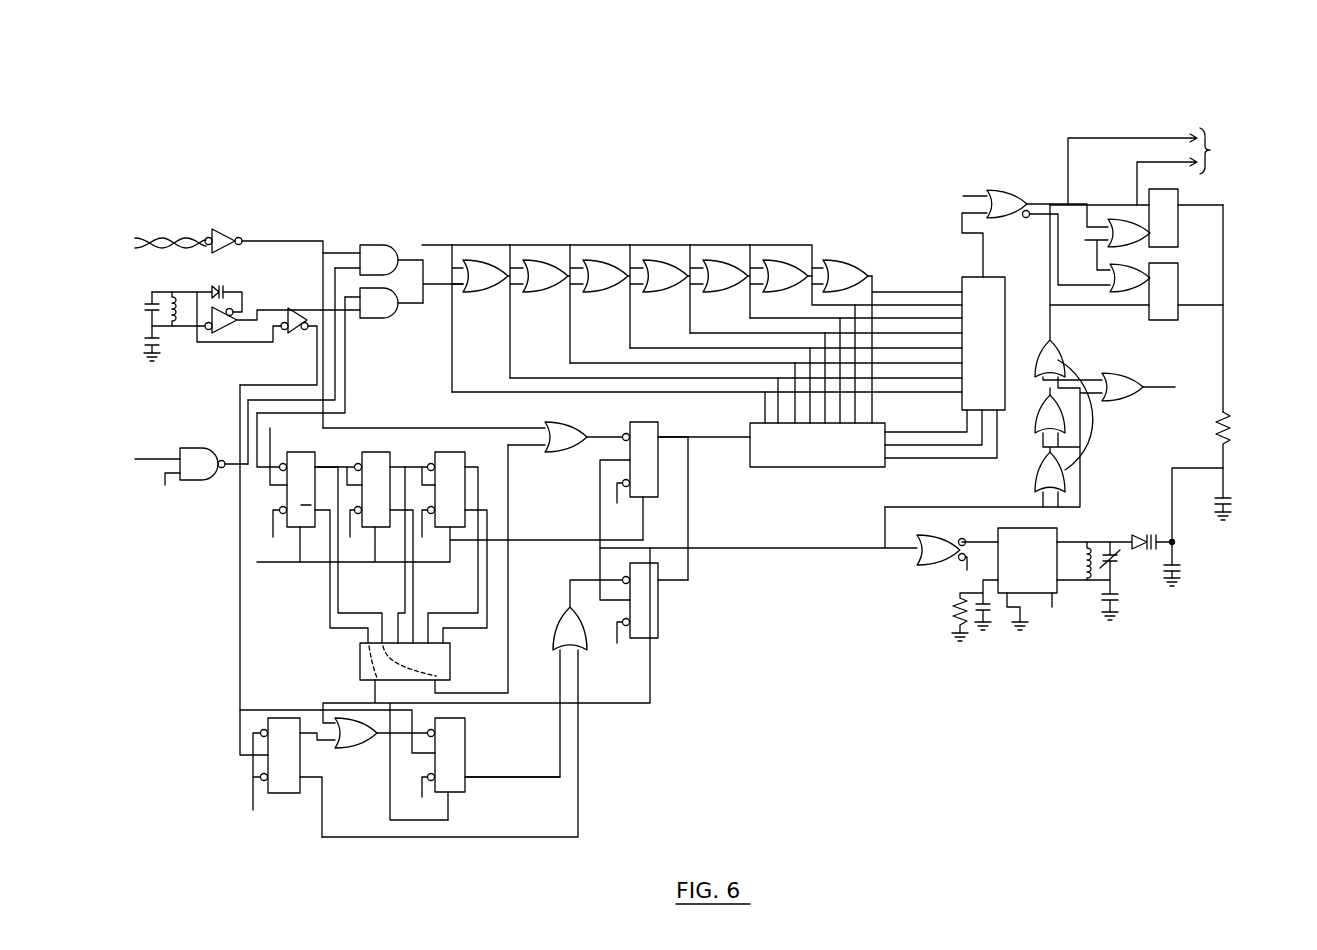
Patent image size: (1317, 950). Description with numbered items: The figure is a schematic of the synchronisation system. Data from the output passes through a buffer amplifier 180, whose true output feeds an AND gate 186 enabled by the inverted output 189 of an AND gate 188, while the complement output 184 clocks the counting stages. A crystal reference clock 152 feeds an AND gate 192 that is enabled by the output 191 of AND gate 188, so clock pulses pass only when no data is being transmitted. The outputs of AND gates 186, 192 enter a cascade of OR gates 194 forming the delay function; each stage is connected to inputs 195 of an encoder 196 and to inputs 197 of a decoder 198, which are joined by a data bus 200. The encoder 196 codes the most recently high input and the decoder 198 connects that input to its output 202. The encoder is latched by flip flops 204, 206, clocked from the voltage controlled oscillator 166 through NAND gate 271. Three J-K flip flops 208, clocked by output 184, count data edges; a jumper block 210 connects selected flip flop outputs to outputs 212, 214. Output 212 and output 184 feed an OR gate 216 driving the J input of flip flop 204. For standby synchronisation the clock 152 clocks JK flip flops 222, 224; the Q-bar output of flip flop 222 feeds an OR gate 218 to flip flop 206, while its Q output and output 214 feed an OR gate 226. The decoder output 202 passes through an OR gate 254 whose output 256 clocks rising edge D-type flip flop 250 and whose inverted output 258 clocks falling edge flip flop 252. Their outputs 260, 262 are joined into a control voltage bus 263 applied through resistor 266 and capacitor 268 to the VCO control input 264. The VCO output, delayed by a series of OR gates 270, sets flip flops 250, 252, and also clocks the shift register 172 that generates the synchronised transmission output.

The crystal reference clock 152 is at (178, 361).
The voltage controlled oscillator 166 is at (1045, 585).
The shift register 172 is at (1202, 166).
The buffer amplifier 180 is at (220, 230).
The complement output 184 is at (285, 237).
The AND gate 186 is at (372, 243).
The AND gate 188 is at (190, 452).
The inverted output 189 is at (238, 458).
The output 191 is at (222, 470).
The AND gate 192 is at (282, 258).
The OR gates 194 is at (538, 270).
The encoder inputs 195 is at (742, 415).
The encoder 196 is at (817, 469).
The decoder inputs 197 is at (920, 279).
The decoder 198 is at (1000, 295).
The data bus 200 is at (922, 463).
The decoder output 202 is at (985, 250).
The flip flop 204 is at (652, 470).
The flip flop 206 is at (652, 620).
The J-K flip flops 208 is at (447, 455).
The jumper block 210 is at (360, 661).
The output 212 is at (510, 672).
The output 214 is at (373, 692).
The OR gate 216 is at (555, 452).
The OR gate 218 is at (558, 632).
The JK flip flop 222 is at (283, 782).
The JK flip flop 224 is at (467, 740).
The OR gate 226 is at (352, 748).
The D-type flip flop 250 is at (1178, 195).
The D-type flip flop 252 is at (1175, 290).
The OR gate 254 is at (1008, 190).
The output 256 is at (1082, 192).
The inverted output 258 is at (1024, 218).
The output 260 is at (1182, 205).
The output 262 is at (1180, 312).
The control voltage bus 263 is at (1225, 352).
The VCO control input 264 is at (1170, 540).
The resistor 266 is at (1232, 432).
The capacitor 268 is at (1240, 510).
The OR gates 270 is at (1097, 428).
The NAND gate 271 is at (940, 552).